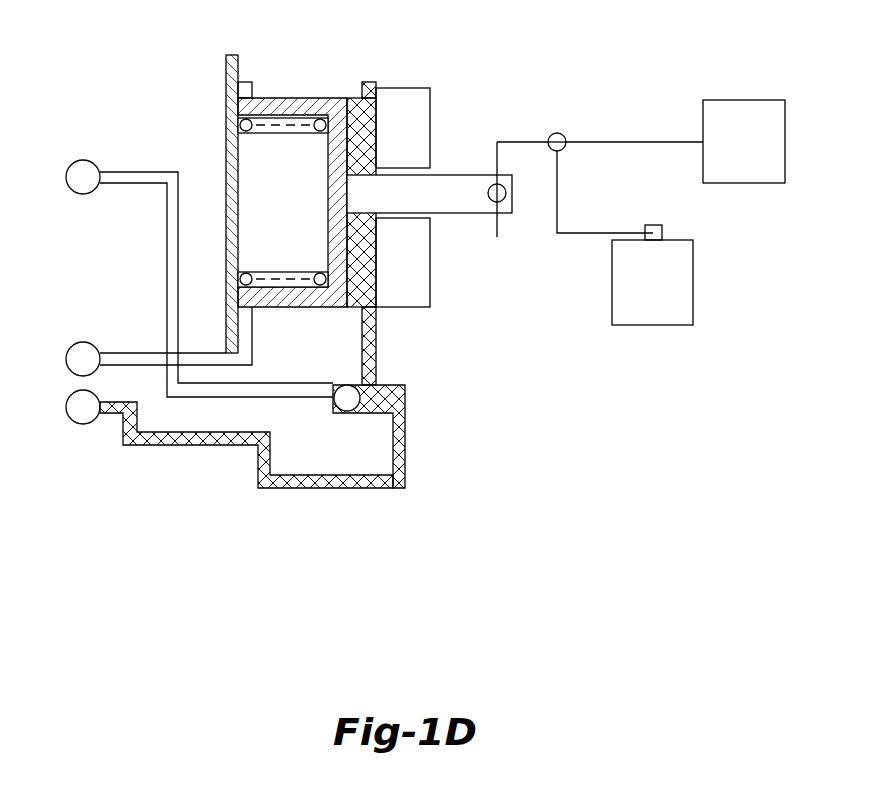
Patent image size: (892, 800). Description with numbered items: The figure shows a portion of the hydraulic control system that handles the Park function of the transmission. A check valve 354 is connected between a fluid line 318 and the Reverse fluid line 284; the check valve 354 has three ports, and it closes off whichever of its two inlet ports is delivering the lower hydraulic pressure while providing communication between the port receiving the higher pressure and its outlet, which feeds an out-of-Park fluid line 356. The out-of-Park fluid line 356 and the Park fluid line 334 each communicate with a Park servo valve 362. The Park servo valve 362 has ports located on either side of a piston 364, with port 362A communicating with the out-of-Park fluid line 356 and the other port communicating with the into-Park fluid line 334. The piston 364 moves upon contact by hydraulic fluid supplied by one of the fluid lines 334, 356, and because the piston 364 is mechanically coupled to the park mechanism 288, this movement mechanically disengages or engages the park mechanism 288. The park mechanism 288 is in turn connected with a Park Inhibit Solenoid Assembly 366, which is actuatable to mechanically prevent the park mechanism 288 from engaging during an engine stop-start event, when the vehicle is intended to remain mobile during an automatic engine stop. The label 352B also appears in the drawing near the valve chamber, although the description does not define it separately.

The Reverse fluid line 284 is at (167, 447).
The park mechanism 288 is at (737, 100).
The fluid line 318 is at (132, 172).
The Park fluid line 334 is at (127, 353).
The valve chamber 352B is at (253, 308).
The check valve 354 is at (405, 432).
The out-of-Park fluid line 356 is at (378, 330).
The Park servo valve 362 is at (378, 68).
The port 362A is at (377, 304).
The piston 364 is at (297, 102).
The Park Inhibit Solenoid Assembly 366 is at (695, 283).